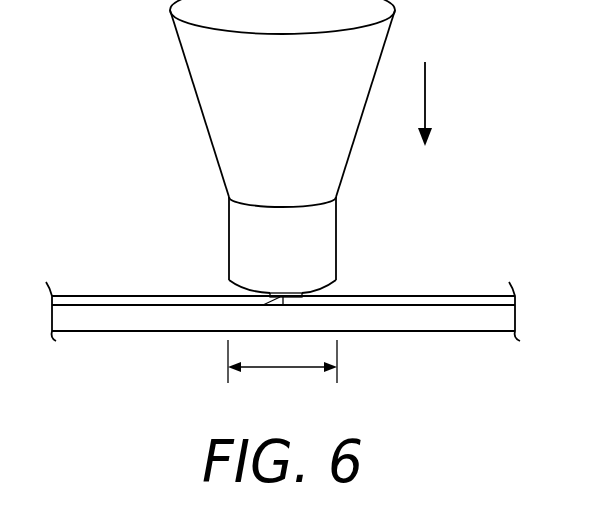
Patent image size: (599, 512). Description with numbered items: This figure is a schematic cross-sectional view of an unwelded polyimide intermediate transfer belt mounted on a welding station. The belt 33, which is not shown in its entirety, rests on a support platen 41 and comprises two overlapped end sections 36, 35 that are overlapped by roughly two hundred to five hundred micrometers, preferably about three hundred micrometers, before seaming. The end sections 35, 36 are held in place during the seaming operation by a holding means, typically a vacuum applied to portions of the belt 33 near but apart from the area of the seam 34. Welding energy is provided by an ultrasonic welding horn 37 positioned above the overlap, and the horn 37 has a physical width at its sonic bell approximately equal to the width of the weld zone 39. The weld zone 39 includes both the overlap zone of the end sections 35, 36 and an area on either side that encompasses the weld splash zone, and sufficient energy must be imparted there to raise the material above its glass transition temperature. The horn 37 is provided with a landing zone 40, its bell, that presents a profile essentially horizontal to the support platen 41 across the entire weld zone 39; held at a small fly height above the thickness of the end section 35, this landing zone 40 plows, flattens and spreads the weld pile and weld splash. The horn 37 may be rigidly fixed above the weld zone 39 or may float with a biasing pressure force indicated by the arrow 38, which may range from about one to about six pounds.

The belt 33 is at (440, 296).
The seam 34 is at (265, 291).
The end section 35 is at (297, 303).
The end section 36 is at (293, 293).
The ultrasonic welding horn 37 is at (198, 43).
The arrow 38 is at (425, 92).
The weld zone 39 is at (292, 370).
The landing zone 40 is at (283, 293).
The support platen 41 is at (142, 320).